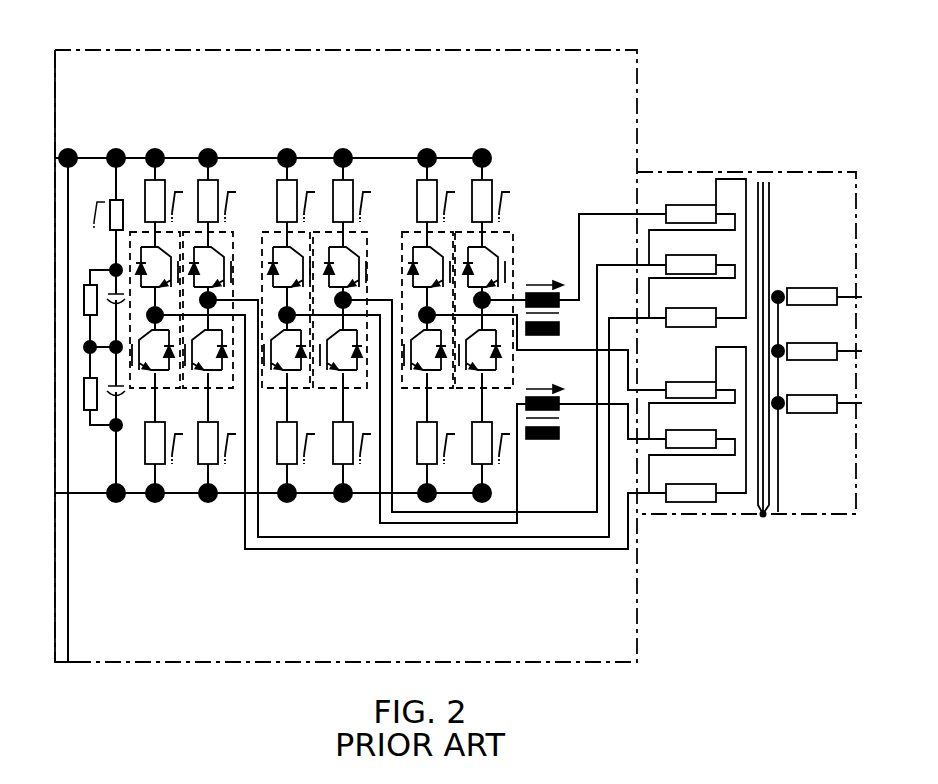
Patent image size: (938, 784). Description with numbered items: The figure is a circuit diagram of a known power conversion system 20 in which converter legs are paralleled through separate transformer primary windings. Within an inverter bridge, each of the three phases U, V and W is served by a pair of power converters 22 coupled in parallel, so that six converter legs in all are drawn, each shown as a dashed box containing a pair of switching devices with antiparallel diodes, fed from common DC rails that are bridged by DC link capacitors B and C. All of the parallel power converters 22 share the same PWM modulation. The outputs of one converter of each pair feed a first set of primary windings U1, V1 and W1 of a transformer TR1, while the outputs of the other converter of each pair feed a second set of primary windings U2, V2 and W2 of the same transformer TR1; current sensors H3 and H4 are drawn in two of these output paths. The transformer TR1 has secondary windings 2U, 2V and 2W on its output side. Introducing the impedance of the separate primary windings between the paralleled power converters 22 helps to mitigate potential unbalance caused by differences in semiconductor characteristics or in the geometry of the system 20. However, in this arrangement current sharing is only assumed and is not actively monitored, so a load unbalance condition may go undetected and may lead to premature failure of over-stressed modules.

The power conversion system 20 is at (852, 77).
The power converter 22 is at (137, 232).
The transformer TR1 is at (749, 332).
The current sensor H3 is at (544, 298).
The current sensor H4 is at (544, 402).
The primary winding U1 is at (691, 203).
The primary winding V1 is at (691, 254).
The primary winding W1 is at (691, 307).
The primary winding U2 is at (691, 379).
The primary winding V2 is at (691, 428).
The primary winding W2 is at (691, 482).
The secondary winding 2U is at (812, 285).
The secondary winding 2V is at (812, 340).
The secondary winding 2W is at (812, 393).
The DC link capacitor B is at (104, 311).
The DC link capacitor C is at (104, 384).